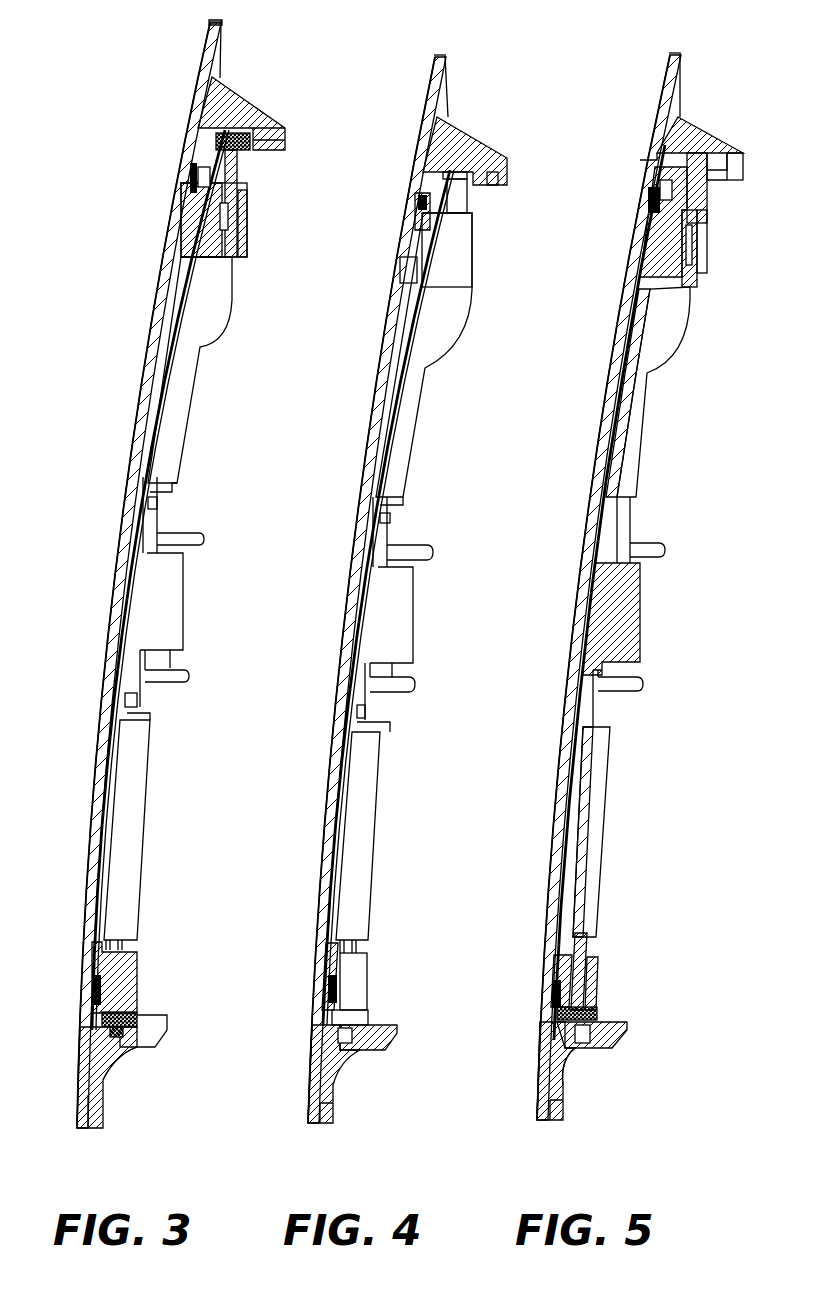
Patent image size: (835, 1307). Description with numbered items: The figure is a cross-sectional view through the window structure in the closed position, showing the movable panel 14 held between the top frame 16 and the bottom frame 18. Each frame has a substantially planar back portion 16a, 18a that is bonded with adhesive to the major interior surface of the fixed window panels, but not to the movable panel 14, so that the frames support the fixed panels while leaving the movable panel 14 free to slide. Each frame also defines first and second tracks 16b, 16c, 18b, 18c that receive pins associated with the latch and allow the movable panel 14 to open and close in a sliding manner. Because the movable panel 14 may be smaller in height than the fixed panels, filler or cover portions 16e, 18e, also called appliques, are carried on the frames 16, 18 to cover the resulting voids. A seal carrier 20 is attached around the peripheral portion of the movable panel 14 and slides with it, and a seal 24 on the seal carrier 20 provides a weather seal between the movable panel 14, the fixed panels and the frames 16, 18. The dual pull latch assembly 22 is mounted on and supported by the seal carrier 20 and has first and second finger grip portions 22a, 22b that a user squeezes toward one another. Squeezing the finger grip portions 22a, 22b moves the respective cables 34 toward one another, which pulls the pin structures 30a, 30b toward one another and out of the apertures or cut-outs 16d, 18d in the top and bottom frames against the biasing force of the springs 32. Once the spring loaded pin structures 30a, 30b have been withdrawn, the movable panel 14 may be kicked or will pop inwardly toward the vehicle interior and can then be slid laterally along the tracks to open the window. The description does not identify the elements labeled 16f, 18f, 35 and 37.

In FIG. 3, the movable panel 14 is at (120, 585).
In FIG. 4, the movable panel 14 is at (372, 405).
In FIG. 5, the movable panel 14 is at (612, 408).
In FIG. 3, the top frame 16 is at (226, 110).
In FIG. 4, the top frame 16 is at (435, 140).
In FIG. 5, the top frame 16 is at (658, 160).
In FIG. 3, the back portion 16a is at (202, 60).
In FIG. 4, the back portion 16a is at (430, 85).
In FIG. 5, the back portion 16a is at (668, 70).
In FIG. 3, the first track 16b is at (234, 135).
In FIG. 4, the first track 16b is at (485, 168).
In FIG. 5, the second track 16c is at (728, 153).
In FIG. 5, the aperture 16d is at (700, 150).
In FIG. 3, the filler portion 16e is at (222, 43).
In FIG. 5, the header notch 16f is at (712, 168).
In FIG. 3, the bottom frame 18 is at (100, 1055).
In FIG. 4, the bottom frame 18 is at (325, 1045).
In FIG. 5, the bottom frame 18 is at (545, 1073).
In FIG. 3, the back portion 18a is at (80, 1100).
In FIG. 4, the back portion 18a is at (312, 1100).
In FIG. 5, the back portion 18a is at (540, 1100).
In FIG. 3, the first track 18b is at (110, 1052).
In FIG. 4, the first track 18b is at (355, 1050).
In FIG. 5, the second track 18c is at (610, 1050).
In FIG. 5, the aperture 18d is at (592, 1060).
In FIG. 4, the filler portion 18e is at (340, 1110).
In FIG. 5, the filler portion 18e is at (555, 1115).
In FIG. 5, the base pad 18f is at (600, 1018).
In FIG. 3, the seal carrier 20 is at (200, 220).
In FIG. 4, the seal carrier 20 is at (400, 238).
In FIG. 5, the seal carrier 20 is at (660, 240).
In FIG. 3, the dual pull latch assembly 22 is at (203, 605).
In FIG. 4, the dual pull latch assembly 22 is at (452, 547).
In FIG. 5, the dual pull latch assembly 22 is at (686, 552).
In FIG. 3, the first finger grip portion 22a is at (185, 525).
In FIG. 4, the first finger grip portion 22a is at (415, 545).
In FIG. 5, the first finger grip portion 22a is at (645, 550).
In FIG. 3, the second finger grip portion 22b is at (175, 682).
In FIG. 4, the second finger grip portion 22b is at (405, 685).
In FIG. 5, the second finger grip portion 22b is at (630, 688).
In FIG. 3, the seal 24 is at (180, 180).
In FIG. 4, the seal 24 is at (408, 205).
In FIG. 5, the seal 24 is at (650, 195).
In FIG. 4, the pin structure 30a is at (462, 203).
In FIG. 5, the pin structure 30a is at (705, 197).
In FIG. 5, the pin structure 30b is at (600, 992).
In FIG. 5, the spring 32 is at (692, 248).
In FIG. 3, the cable 34 is at (172, 490).
In FIG. 4, the cable 34 is at (398, 500).
In FIG. 5, the cable 34 is at (632, 425).
In FIG. 3, the fastener 35 is at (250, 172).
In FIG. 3, the stiffener rail 37 is at (186, 405).
In FIG. 4, the stiffener rail 37 is at (425, 370).
In FIG. 5, the stiffener rail 37 is at (650, 385).